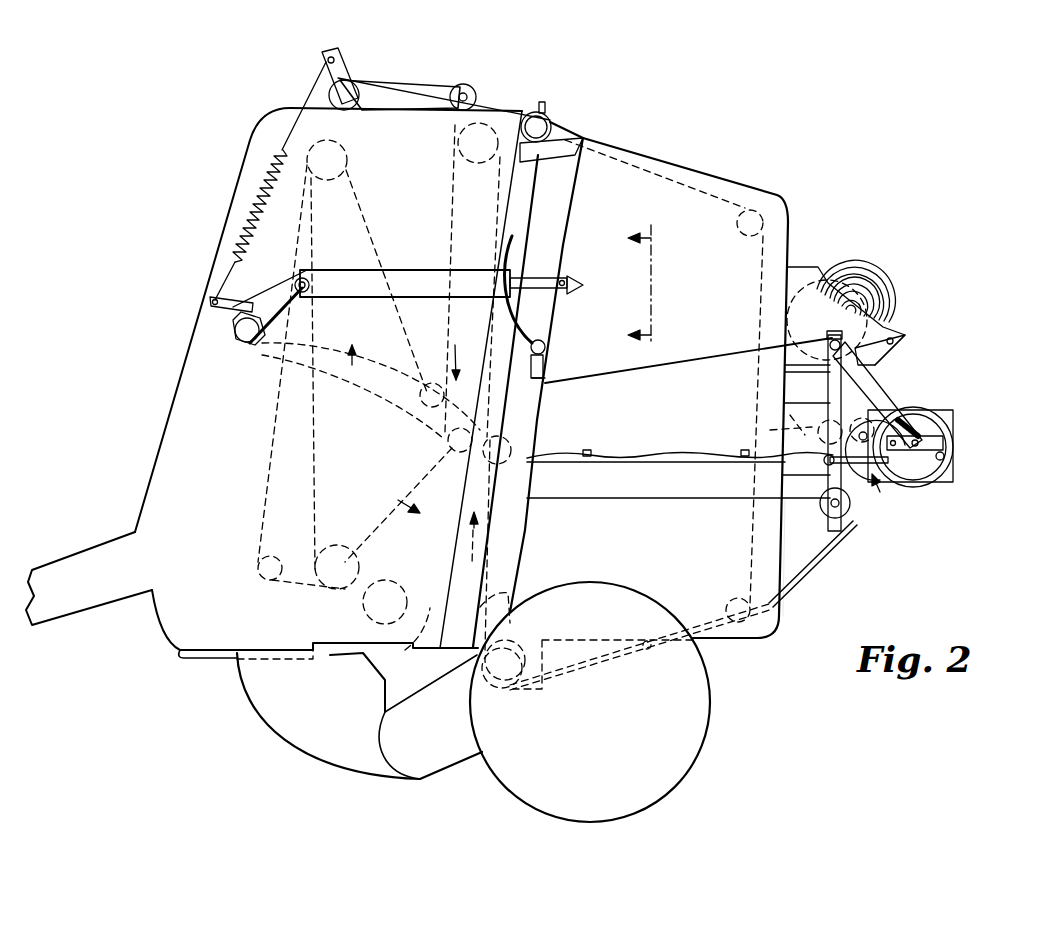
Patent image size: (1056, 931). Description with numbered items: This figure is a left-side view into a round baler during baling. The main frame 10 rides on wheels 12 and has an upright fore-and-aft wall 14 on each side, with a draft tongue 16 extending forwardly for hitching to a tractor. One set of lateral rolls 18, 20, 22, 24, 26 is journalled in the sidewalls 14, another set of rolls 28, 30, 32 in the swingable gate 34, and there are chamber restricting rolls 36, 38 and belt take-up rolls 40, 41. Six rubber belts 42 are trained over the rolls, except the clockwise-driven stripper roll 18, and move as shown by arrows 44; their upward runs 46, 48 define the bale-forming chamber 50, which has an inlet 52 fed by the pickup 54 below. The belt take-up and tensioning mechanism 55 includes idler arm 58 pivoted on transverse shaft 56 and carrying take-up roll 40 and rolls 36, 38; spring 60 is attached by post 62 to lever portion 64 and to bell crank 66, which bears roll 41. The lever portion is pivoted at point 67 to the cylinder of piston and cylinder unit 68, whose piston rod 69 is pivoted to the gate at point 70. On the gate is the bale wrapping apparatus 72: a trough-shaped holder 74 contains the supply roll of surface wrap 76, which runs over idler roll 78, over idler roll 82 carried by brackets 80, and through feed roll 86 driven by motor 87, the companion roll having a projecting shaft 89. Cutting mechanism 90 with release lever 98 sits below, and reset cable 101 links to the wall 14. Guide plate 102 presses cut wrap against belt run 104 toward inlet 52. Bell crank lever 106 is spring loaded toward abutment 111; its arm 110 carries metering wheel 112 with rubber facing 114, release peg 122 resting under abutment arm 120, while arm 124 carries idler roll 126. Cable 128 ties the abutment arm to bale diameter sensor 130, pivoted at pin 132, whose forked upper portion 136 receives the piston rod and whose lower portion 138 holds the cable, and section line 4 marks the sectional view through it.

The section line 4- 4 is at (648, 288).
The main frame 10 is at (158, 333).
The wheels 12 is at (712, 690).
The upright fore-and-aft extending wall 14 is at (185, 401).
The draft tongue 16 is at (95, 553).
The stripper roll 18 is at (392, 597).
The roll 20 is at (330, 580).
The lower foremost roll 22 is at (258, 569).
The roll 24 is at (343, 150).
The roll 26 is at (462, 147).
The roll 28 is at (752, 210).
The roll 30 is at (728, 600).
The roll 32 is at (520, 697).
The swingable gate 34 is at (682, 185).
The chamber restricting roll 36 is at (512, 446).
The chamber restricting roll 38 is at (448, 442).
The belt take-up roll 40 is at (420, 400).
The belt take-up roll 41 is at (480, 86).
The rubber belts 42 is at (758, 540).
The arrows 44 is at (412, 490).
The upwardly extending run 46 is at (500, 585).
The upwardly extending run 48 is at (400, 503).
The bale-forming chamber 50 is at (412, 548).
The inlet 52 is at (378, 680).
The pickup 54 is at (359, 716).
The belt take-up and tensioning mechanism 55 is at (352, 368).
The horizontal transverse shaft 56 is at (258, 348).
The idler arm 58 is at (455, 345).
The spring 60 is at (250, 210).
The post 62 is at (205, 312).
The lever portion 64 is at (285, 280).
The bell crank 66 is at (392, 92).
The pivot point 67 is at (305, 278).
The piston and cylinder unit 68 is at (418, 270).
The piston rod 69 is at (542, 268).
The pivot point 70 is at (577, 280).
The bale wrapping apparatus 72 is at (920, 340).
The trough-shaped holder 74 is at (796, 262).
The supply roll of surface wrap 76 is at (845, 275).
The idler roll 78 is at (891, 337).
The brackets 80 is at (793, 465).
The idler roll 82 is at (830, 432).
The feed roll 86 is at (821, 503).
The motor 87 is at (835, 418).
The shaft 89 is at (852, 508).
The cutting mechanism 90 is at (882, 494).
The release lever 98 is at (918, 482).
The reset cable 101 is at (655, 457).
The guide plate 102 is at (812, 572).
The belt run 104 is at (647, 649).
The bell crank lever 106 is at (800, 398).
The arm 110 is at (870, 392).
The abutment 111 is at (880, 356).
The metering wheel 112 is at (935, 422).
The rubber facing 114 is at (950, 468).
The abutment arm 120 is at (950, 438).
The release peg 122 is at (955, 458).
The arm 124 is at (790, 368).
The idler roll 126 is at (862, 530).
The cable 128 is at (732, 345).
The bale diameter sensor 130 is at (542, 317).
The pivot pin 132 is at (548, 347).
The upper portion 136 is at (527, 248).
The lower portion 138 is at (545, 382).